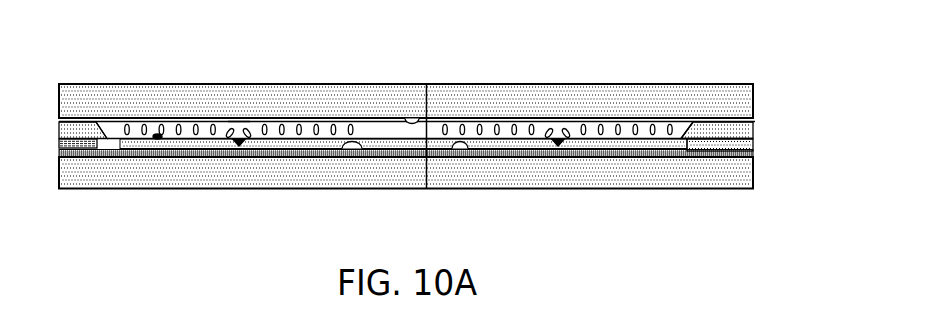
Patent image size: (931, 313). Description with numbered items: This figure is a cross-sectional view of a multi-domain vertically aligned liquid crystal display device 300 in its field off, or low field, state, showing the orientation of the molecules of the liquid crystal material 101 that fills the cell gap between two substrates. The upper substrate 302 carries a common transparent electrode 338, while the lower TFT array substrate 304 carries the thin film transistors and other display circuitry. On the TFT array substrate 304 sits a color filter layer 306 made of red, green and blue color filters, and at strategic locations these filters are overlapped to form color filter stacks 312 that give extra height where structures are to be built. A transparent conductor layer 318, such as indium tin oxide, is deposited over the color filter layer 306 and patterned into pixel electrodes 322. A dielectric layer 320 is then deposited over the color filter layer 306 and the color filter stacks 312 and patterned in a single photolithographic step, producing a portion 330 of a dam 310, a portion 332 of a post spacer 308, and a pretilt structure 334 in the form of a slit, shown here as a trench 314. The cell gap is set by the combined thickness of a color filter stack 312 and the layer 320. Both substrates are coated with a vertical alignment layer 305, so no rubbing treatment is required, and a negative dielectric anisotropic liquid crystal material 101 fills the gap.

The device 300 is at (415, 159).
The substrate 302 is at (58, 94).
The TFT array substrate 304 is at (58, 182).
The vertical alignment layer 305 is at (172, 122).
The color filter layer 306 is at (757, 158).
The post spacer 308 is at (760, 133).
The dam 310 is at (56, 130).
The color filter stack 312 is at (58, 144).
The trench 314 is at (239, 122).
The layer 318 is at (354, 148).
The layer 320 is at (756, 122).
The pixel electrode 322 is at (459, 149).
The portion of dam 330 is at (97, 123).
The portion of post spacer 332 is at (717, 121).
The pretilt structure 334 is at (241, 144).
The common transparent electrode 338 is at (418, 118).
The liquid crystal material 101 is at (317, 124).